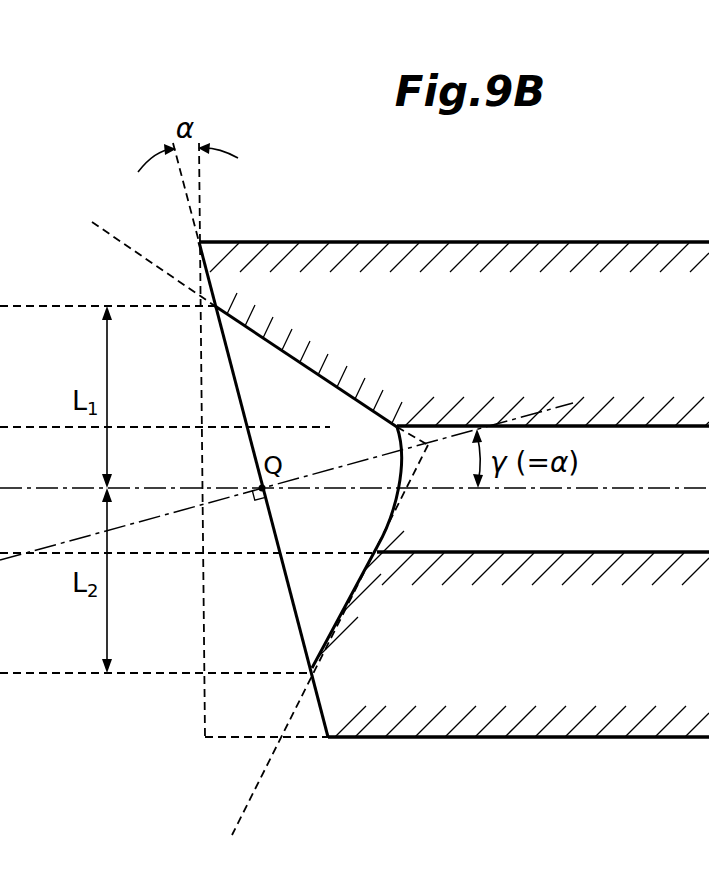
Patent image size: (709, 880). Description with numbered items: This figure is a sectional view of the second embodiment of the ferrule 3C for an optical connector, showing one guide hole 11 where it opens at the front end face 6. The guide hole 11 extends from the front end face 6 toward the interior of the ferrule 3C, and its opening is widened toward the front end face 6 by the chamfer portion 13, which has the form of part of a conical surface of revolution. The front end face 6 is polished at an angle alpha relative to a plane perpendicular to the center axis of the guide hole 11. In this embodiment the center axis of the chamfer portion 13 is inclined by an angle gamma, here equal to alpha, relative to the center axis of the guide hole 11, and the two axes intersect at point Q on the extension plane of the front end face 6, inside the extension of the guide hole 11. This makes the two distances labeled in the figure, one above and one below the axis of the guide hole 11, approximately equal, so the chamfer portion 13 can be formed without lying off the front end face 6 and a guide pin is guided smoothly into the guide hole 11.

The ferrule 3C is at (612, 252).
The guide hole 11 is at (632, 438).
The front end face 6 is at (316, 708).
The chamfer portion 13 is at (342, 598).